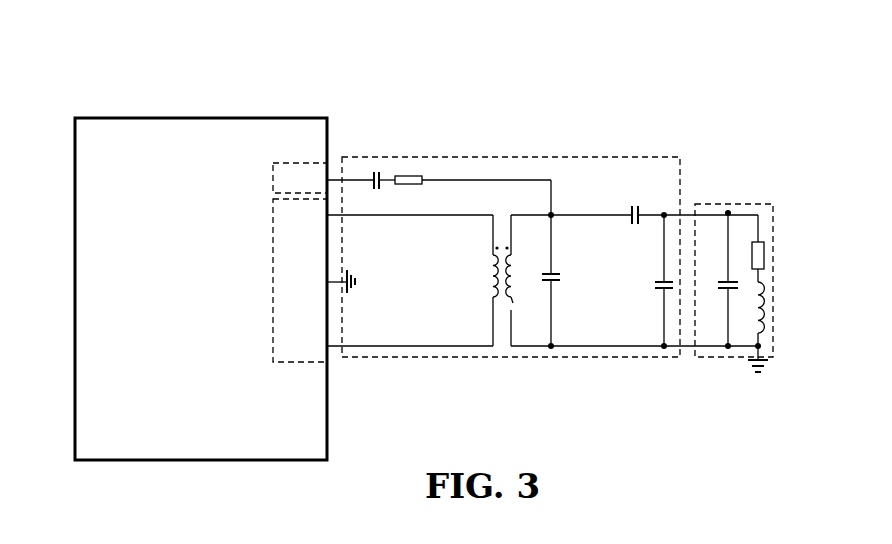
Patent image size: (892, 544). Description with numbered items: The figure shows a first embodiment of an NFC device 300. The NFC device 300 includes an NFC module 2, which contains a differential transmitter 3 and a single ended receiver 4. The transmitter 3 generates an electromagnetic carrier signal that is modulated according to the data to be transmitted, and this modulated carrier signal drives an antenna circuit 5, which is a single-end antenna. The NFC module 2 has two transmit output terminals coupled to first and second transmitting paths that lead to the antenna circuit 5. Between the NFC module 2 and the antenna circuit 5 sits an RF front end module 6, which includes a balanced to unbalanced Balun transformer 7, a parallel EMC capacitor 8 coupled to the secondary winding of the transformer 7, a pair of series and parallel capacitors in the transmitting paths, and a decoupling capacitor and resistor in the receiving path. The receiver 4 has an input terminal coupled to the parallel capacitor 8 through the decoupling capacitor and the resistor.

The NFC module 2 is at (167, 107).
The differential transmitter 3 is at (262, 300).
The single ended receiver 4 is at (264, 153).
The antenna circuit 5 is at (736, 196).
The RF front end module 6 is at (542, 231).
The balanced to unbalanced (Balun) transformer 7 is at (502, 226).
The parallel capacitor C_EMC 8 is at (562, 262).
The NFC device 300 is at (500, 86).